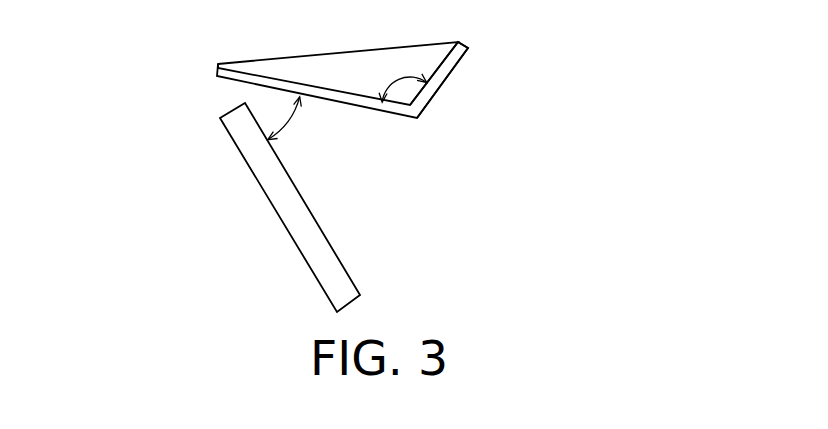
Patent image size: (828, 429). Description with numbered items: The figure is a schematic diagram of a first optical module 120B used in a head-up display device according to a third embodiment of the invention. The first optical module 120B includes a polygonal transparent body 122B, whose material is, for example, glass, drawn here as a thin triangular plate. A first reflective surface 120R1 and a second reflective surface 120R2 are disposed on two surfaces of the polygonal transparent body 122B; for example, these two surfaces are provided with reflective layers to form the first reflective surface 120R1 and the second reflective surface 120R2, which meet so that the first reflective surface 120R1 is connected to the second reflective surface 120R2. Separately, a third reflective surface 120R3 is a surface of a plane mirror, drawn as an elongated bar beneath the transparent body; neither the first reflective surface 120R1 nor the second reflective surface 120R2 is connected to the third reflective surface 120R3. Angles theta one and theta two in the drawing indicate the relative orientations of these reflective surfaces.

The first optical module 120B is at (376, 158).
The polygonal transparent body 122B is at (302, 62).
The first reflective surface 120R1 is at (450, 63).
The second reflective surface 120R2 is at (218, 68).
The third reflective surface 120R3 is at (287, 217).